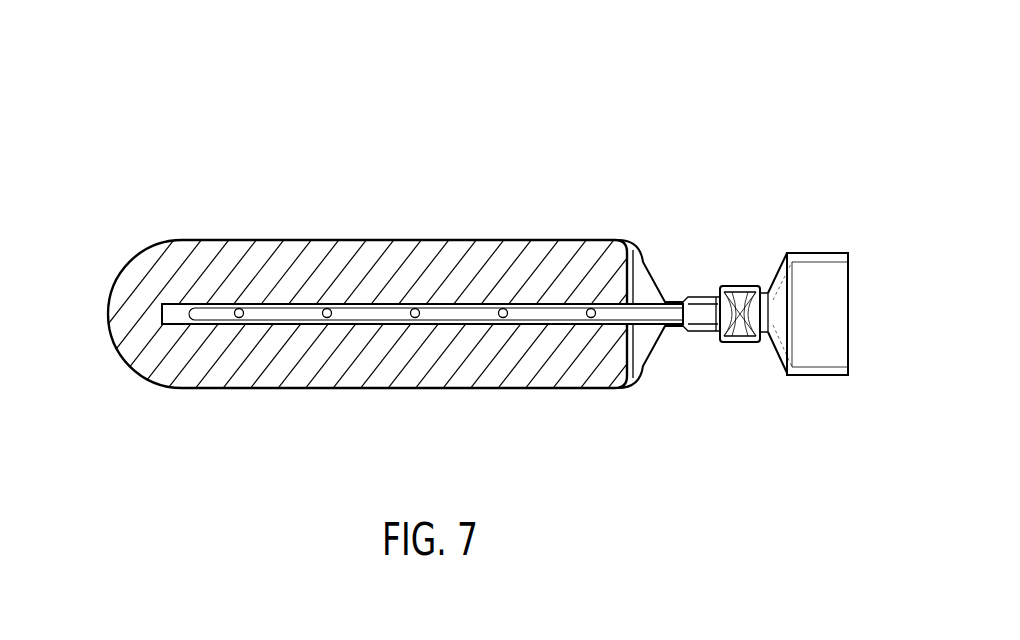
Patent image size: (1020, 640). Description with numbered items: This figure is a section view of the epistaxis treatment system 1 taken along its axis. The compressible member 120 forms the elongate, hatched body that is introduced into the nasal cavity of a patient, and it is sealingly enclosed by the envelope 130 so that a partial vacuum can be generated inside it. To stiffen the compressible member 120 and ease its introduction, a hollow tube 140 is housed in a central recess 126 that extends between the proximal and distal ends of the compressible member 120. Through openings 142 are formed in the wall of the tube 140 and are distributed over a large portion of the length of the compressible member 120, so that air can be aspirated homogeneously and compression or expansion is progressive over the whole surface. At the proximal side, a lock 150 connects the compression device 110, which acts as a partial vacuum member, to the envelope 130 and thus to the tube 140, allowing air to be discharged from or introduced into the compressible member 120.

The system for treating an epistaxis 1 is at (745, 106).
The compression device 110 is at (827, 251).
The compressible member 120 is at (460, 267).
The central recess 126 is at (172, 311).
The envelope 130 is at (642, 280).
The tube 140 is at (647, 314).
The through openings 142 is at (190, 321).
The lock 150 is at (726, 266).